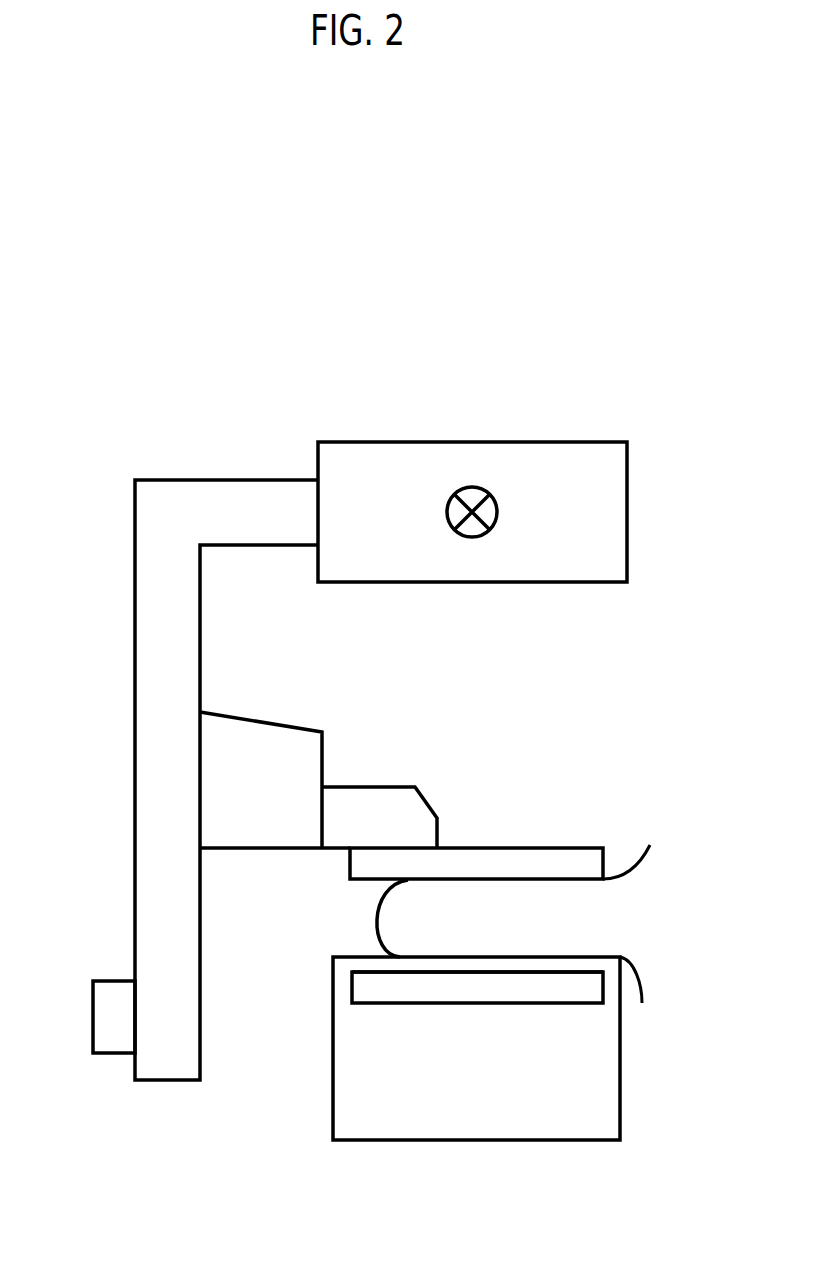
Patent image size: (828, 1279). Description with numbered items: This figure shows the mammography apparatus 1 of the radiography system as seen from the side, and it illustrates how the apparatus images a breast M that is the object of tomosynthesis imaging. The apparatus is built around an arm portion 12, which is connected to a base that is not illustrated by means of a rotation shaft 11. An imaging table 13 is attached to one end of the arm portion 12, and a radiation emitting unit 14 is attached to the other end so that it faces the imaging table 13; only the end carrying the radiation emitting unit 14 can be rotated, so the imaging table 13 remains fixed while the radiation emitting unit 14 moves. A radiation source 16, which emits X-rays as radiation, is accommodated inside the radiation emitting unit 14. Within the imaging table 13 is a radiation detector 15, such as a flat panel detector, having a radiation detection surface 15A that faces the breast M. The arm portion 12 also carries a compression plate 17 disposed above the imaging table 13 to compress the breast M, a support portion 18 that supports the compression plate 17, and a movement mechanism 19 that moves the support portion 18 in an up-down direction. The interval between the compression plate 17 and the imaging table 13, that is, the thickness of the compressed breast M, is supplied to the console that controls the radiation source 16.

The mammography apparatus 1 is at (236, 414).
The rotation shaft 11 is at (110, 987).
The arm portion 12 is at (148, 636).
The imaging table 13 is at (350, 1101).
The radiation emitting unit 14 is at (562, 442).
The radiation detector 15 is at (352, 985).
The radiation detection surface 15A is at (574, 972).
The radiation source 16 is at (470, 487).
The compression plate 17 is at (553, 857).
The support portion 18 is at (385, 795).
The movement mechanism 19 is at (288, 737).
The breast M is at (387, 915).